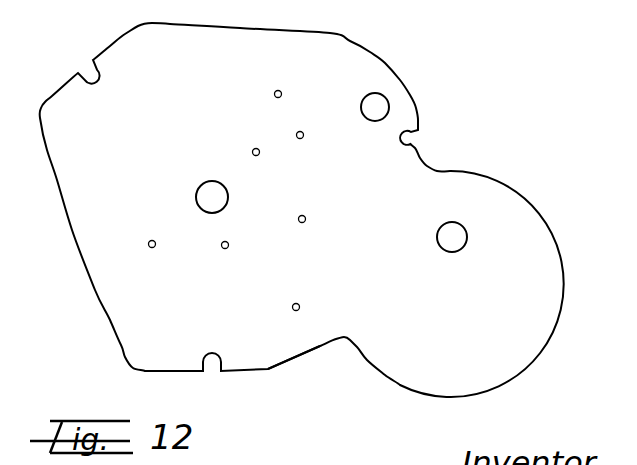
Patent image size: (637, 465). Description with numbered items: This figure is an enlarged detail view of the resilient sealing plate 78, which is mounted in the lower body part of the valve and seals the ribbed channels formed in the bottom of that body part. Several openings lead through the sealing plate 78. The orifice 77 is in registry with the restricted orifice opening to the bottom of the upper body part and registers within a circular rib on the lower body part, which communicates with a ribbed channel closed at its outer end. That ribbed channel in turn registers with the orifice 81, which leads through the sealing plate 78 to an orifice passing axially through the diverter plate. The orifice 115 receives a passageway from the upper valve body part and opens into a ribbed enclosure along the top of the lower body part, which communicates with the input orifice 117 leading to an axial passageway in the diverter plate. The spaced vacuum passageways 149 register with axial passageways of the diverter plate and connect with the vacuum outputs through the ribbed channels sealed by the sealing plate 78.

The orifice 77 is at (455, 250).
The resilient sealing plate 78 is at (291, 364).
The orifice 81 is at (251, 206).
The orifice 115 is at (373, 93).
The input orifice 117 is at (302, 132).
The vacuum passageways 149 is at (275, 96).